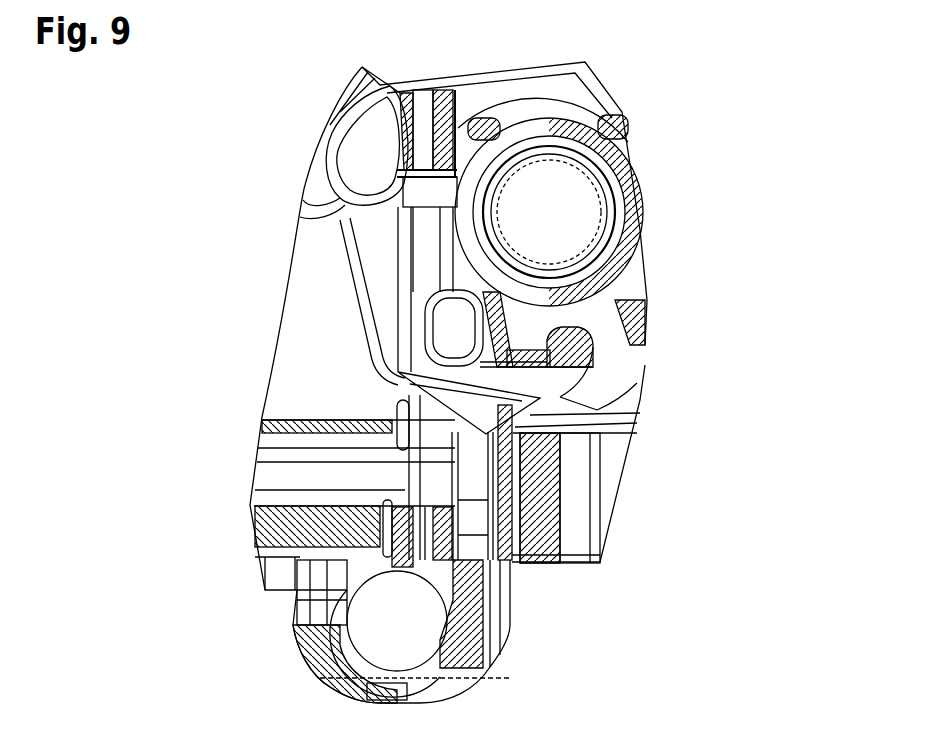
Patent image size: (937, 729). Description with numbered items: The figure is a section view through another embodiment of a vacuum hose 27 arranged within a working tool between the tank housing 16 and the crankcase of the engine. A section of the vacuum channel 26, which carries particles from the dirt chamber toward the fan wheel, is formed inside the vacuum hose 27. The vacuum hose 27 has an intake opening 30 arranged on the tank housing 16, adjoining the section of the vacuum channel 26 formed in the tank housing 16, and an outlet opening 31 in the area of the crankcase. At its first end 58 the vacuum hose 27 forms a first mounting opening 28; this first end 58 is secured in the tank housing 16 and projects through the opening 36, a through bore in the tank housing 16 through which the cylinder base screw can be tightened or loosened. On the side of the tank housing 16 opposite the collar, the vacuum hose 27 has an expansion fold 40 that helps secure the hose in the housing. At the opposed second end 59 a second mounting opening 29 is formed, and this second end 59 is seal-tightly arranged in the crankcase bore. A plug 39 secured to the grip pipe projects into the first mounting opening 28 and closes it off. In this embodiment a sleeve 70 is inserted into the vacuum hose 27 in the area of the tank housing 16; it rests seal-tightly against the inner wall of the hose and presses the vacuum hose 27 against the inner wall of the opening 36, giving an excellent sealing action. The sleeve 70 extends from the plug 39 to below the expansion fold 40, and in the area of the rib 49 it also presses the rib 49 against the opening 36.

The tank housing 16 is at (548, 517).
The vacuum channel 26 is at (285, 494).
The vacuum hose 27 is at (375, 318).
The first mounting opening 28 is at (297, 603).
The second mounting opening 29 is at (428, 213).
The intake opening 30 is at (440, 458).
The outlet opening 31 is at (460, 320).
The opening 36 is at (527, 478).
The plug 39 is at (508, 615).
The expansion fold 40 is at (517, 368).
The rib 49 is at (408, 421).
The first end 58 is at (523, 570).
The second end 59 is at (418, 223).
The sleeve 70 is at (565, 560).